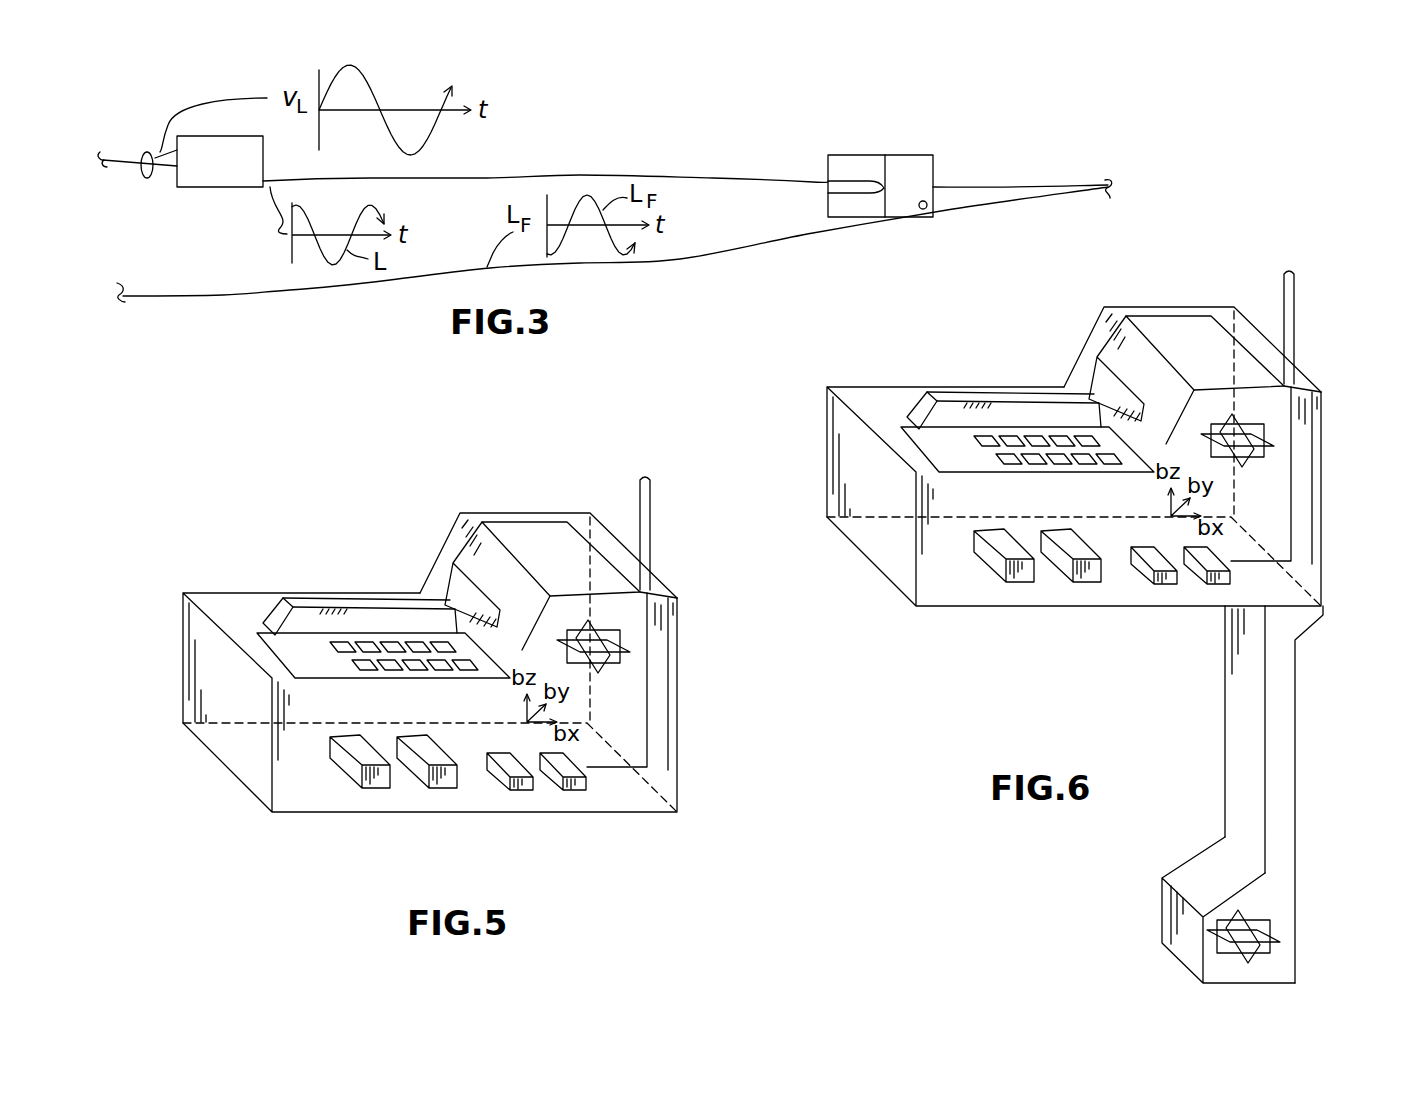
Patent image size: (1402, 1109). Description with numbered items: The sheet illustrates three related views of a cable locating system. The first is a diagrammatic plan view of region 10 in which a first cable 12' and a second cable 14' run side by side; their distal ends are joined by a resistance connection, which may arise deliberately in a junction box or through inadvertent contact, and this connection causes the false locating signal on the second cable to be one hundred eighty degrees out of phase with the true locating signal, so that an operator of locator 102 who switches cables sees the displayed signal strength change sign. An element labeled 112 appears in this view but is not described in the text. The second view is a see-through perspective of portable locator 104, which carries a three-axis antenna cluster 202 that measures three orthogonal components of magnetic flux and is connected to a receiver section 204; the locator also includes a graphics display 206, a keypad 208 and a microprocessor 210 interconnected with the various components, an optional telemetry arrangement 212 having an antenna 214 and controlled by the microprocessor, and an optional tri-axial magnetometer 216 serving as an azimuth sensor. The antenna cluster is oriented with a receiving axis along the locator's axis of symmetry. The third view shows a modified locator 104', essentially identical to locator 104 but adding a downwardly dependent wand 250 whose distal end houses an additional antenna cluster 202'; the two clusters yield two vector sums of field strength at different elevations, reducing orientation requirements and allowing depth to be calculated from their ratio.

In FIG. 3, the region 10 is at (573, 162).
In FIG. 3, the first cable 12' is at (451, 204).
In FIG. 3, the second cable 14' is at (191, 275).
In FIG. 3, the locator 102 is at (245, 172).
In FIG. 3, the portable locator 104 is at (839, 194).
In FIG. 5, the portable locator 104 is at (430, 659).
In FIG. 6, the modified locator 104' is at (1074, 456).
In FIG. 3, the turbine propeller 112 is at (140, 168).
In FIG. 5, the three-axis antenna cluster 202 is at (649, 647).
In FIG. 6, the three-axis antenna cluster 202 is at (1283, 401).
In FIG. 6, the additional antenna cluster 202' is at (1172, 936).
In FIG. 5, the receiver section 204 is at (523, 791).
In FIG. 6, the receiver section 204 is at (1133, 598).
In FIG. 5, the graphics display 206 is at (508, 517).
In FIG. 6, the graphics display 206 is at (1205, 332).
In FIG. 5, the keypad 208 is at (262, 648).
In FIG. 6, the keypad 208 is at (999, 443).
In FIG. 5, the microprocessor 210 is at (373, 789).
In FIG. 6, the microprocessor 210 is at (985, 587).
In FIG. 5, the telemetry arrangement 212 is at (573, 790).
In FIG. 6, the telemetry arrangement 212 is at (1166, 610).
In FIG. 5, the antenna 214 is at (653, 518).
In FIG. 6, the antenna 214 is at (1326, 327).
In FIG. 5, the tri-axial magnetometer 216 is at (449, 789).
In FIG. 6, the tri-axial magnetometer 216 is at (1062, 586).
In FIG. 6, the downwardly dependent wand 250 is at (1233, 794).